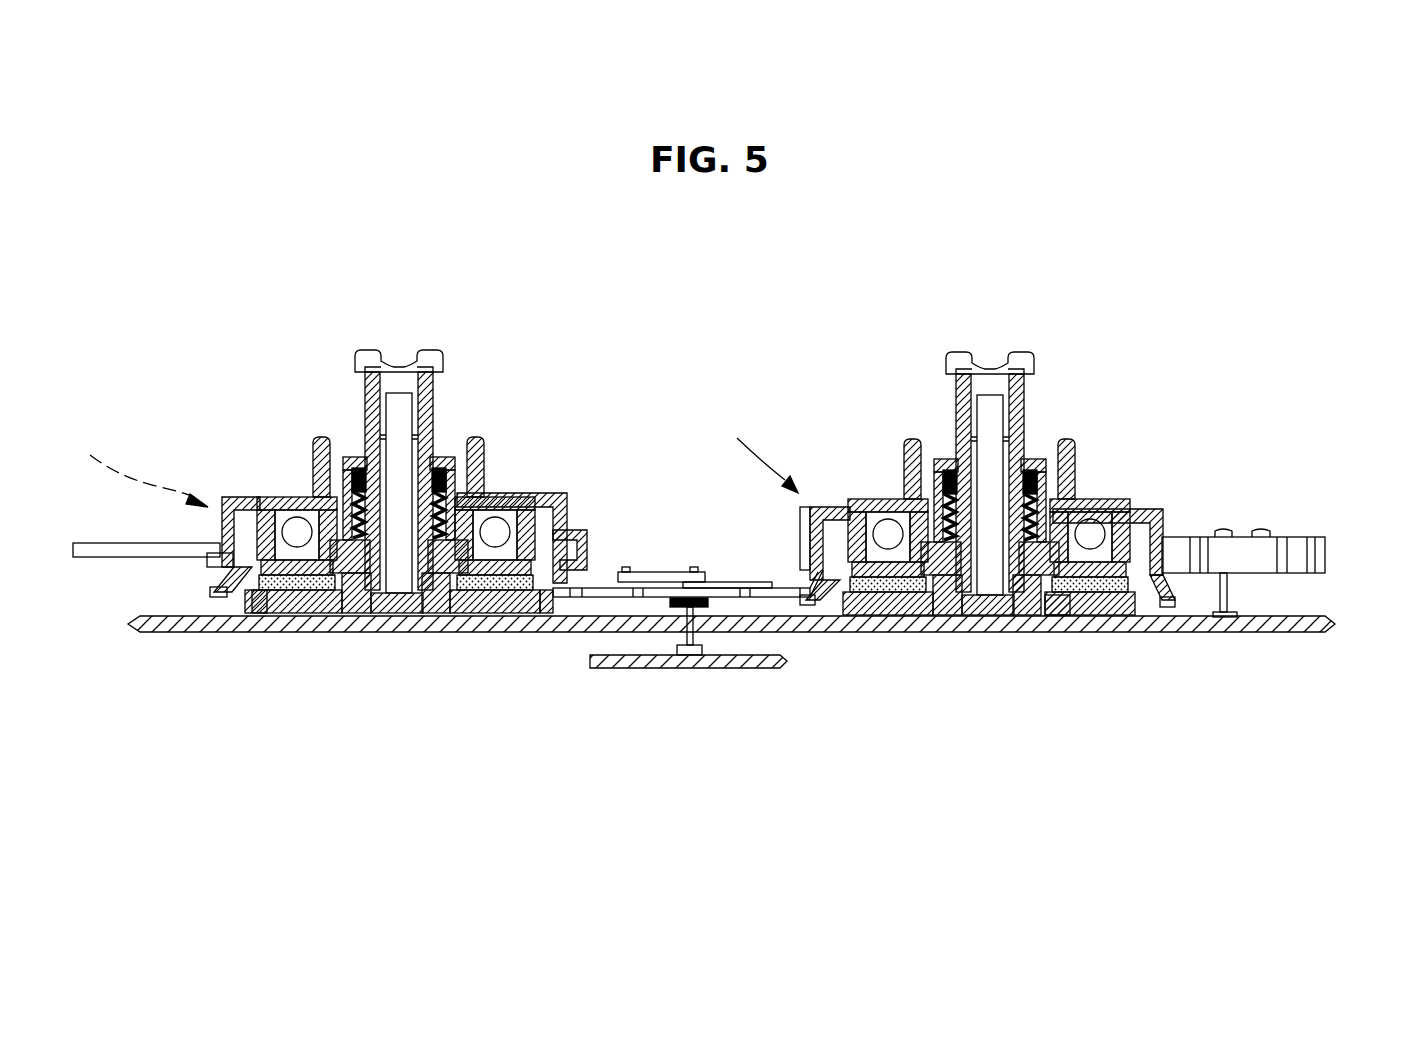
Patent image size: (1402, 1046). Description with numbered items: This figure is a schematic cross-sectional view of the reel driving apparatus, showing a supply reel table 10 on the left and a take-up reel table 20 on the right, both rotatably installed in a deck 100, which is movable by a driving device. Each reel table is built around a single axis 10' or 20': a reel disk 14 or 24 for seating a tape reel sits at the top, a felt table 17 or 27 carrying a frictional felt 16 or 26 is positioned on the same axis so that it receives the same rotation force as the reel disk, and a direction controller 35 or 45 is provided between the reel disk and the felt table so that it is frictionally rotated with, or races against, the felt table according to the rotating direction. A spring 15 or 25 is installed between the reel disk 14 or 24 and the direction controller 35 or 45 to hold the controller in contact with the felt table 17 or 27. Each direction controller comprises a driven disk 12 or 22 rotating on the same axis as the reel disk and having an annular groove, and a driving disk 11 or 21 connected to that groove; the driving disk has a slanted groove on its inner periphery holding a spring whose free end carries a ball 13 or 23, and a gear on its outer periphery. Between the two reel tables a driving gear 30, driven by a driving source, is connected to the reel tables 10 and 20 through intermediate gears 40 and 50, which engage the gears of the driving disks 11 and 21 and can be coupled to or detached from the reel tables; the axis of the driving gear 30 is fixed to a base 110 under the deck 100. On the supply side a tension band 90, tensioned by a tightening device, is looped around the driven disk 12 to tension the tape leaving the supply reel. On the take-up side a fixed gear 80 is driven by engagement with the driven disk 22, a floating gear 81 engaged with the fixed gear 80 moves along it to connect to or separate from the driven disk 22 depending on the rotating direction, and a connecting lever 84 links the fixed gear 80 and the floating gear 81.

The supply reel table 10 is at (466, 431).
The axis 10' is at (387, 545).
The driving disk 11 is at (556, 603).
The driven disk 12 is at (558, 510).
The ball 13 is at (272, 500).
The reel disk 14 is at (297, 530).
The spring 15 is at (443, 460).
The frictional felt 16 is at (293, 600).
The felt table 17 is at (252, 615).
The take-up reel table 20 is at (1051, 436).
The axis 20' is at (973, 546).
The driving disk 21 is at (815, 588).
The driven disk 22 is at (822, 517).
The ball 23 is at (880, 530).
The reel disk 24 is at (1092, 530).
The spring 25 is at (947, 457).
The frictional felt 26 is at (1104, 612).
The felt table 27 is at (1046, 600).
The driving gear 30 is at (648, 590).
The direction controller 35 is at (124, 466).
The intermediate gear 40 is at (608, 600).
The direction controller 45 is at (746, 449).
The intermediate gear 50 is at (768, 600).
The fixed gear 80 is at (1187, 540).
The floating gear 81 is at (1290, 625).
The connecting lever 84 is at (1253, 530).
The tension band 90 is at (580, 552).
The deck 100 is at (1320, 634).
The base 110 is at (790, 664).